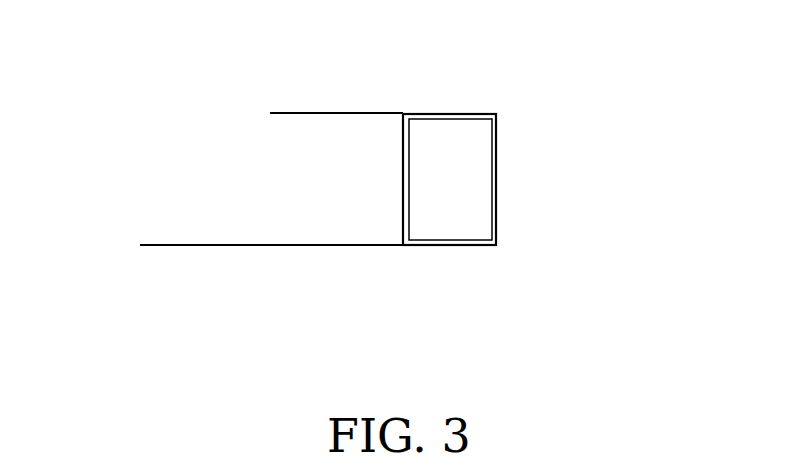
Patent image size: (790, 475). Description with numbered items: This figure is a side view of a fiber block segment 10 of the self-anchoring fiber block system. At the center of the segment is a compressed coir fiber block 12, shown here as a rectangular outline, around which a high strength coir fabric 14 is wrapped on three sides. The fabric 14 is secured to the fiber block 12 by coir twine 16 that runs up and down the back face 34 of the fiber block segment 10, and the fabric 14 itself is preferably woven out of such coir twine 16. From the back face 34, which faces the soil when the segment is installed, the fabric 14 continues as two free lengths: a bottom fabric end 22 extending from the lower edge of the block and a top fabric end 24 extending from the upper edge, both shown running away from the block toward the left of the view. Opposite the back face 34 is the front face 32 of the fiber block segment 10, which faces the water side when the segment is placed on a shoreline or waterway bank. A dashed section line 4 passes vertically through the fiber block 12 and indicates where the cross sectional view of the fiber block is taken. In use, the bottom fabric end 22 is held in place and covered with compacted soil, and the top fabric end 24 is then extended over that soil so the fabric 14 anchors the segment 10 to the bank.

The fiber block segment 10 is at (370, 190).
The compressed coir fiber block 12 is at (430, 205).
The high strength coir fabric 14 is at (466, 113).
The coir twine 16 is at (403, 183).
The bottom fabric end 22 is at (140, 245).
The top fabric end 24 is at (270, 113).
The front face 32 is at (520, 212).
The back face 34 is at (383, 151).
The section line 4- 4 is at (452, 37).